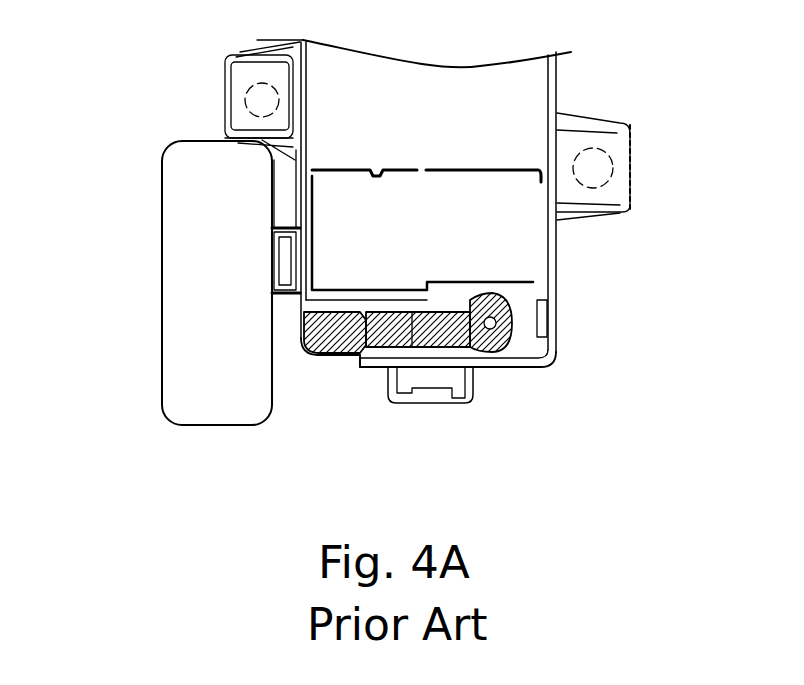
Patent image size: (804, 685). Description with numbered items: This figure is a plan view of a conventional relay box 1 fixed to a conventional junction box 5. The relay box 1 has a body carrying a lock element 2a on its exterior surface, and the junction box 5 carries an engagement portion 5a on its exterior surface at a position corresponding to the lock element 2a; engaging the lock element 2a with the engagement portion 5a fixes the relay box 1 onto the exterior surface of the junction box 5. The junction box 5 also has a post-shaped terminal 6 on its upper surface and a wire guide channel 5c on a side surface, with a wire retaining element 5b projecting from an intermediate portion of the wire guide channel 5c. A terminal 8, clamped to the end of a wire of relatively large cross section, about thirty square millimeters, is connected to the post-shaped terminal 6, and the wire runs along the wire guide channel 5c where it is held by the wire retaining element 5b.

The relay box 1 is at (150, 245).
The lock element 2a is at (268, 260).
The junction box 5 is at (567, 100).
The engagement portion 5a is at (283, 218).
The wire retaining element 5b is at (304, 356).
The wire guide channel 5c is at (345, 357).
The post-shaped terminal 6 is at (503, 325).
The terminal 8 is at (442, 300).